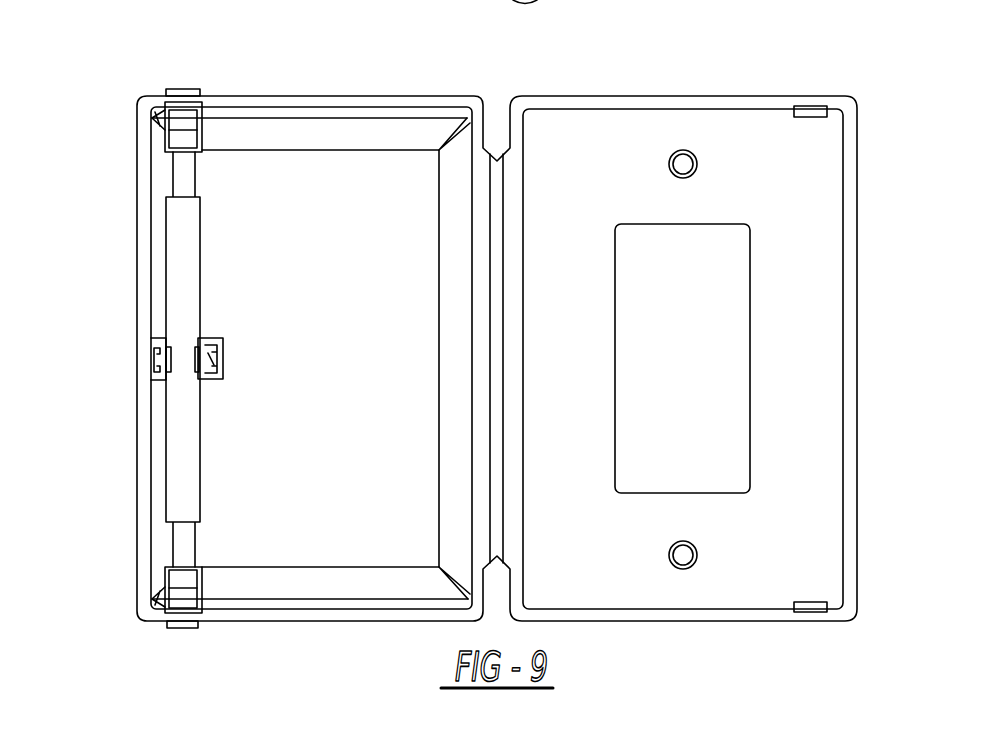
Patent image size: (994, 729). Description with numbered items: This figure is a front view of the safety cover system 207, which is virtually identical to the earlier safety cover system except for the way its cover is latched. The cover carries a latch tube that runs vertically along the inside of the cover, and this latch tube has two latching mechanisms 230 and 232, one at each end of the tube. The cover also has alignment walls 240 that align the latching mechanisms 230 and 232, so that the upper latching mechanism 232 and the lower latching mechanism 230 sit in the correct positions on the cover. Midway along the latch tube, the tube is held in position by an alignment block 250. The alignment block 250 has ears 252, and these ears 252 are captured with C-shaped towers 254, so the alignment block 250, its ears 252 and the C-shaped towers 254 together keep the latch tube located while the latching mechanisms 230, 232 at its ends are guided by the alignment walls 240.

The safety cover system 207 is at (423, 76).
The latching mechanism 230 is at (188, 578).
The latching mechanism 232 is at (181, 120).
The alignment walls 240 is at (200, 131).
The alignment block 250 is at (222, 350).
The ears 252 is at (153, 350).
The C-shaped towers 254 is at (212, 380).